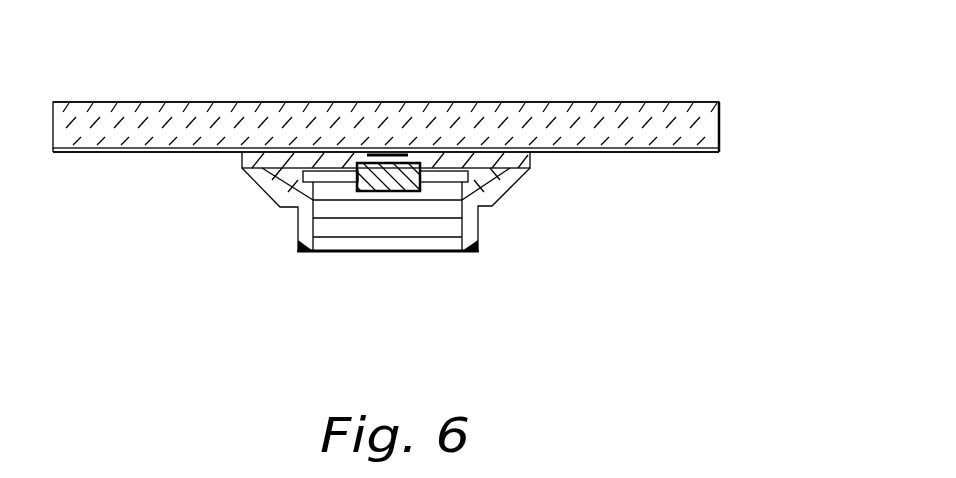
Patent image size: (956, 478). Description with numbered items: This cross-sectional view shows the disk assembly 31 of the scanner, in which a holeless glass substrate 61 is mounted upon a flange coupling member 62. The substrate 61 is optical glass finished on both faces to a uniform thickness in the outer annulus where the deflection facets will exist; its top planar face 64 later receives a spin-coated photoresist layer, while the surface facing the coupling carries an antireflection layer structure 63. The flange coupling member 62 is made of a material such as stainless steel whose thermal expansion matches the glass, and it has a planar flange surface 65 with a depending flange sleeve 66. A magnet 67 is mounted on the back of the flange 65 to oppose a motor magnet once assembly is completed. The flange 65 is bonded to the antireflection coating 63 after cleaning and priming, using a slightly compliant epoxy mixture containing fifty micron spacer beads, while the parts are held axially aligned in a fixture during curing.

The mirror assembly 31 is at (192, 70).
The glass substrate 61 is at (718, 118).
The flange coupling member 62 is at (584, 213).
The antireflection layer structure 63 is at (683, 150).
The top planar face 64 is at (590, 101).
The planar flange surface 65 is at (252, 157).
The depending flange sleeve 66 is at (305, 237).
The magnet 67 is at (393, 192).